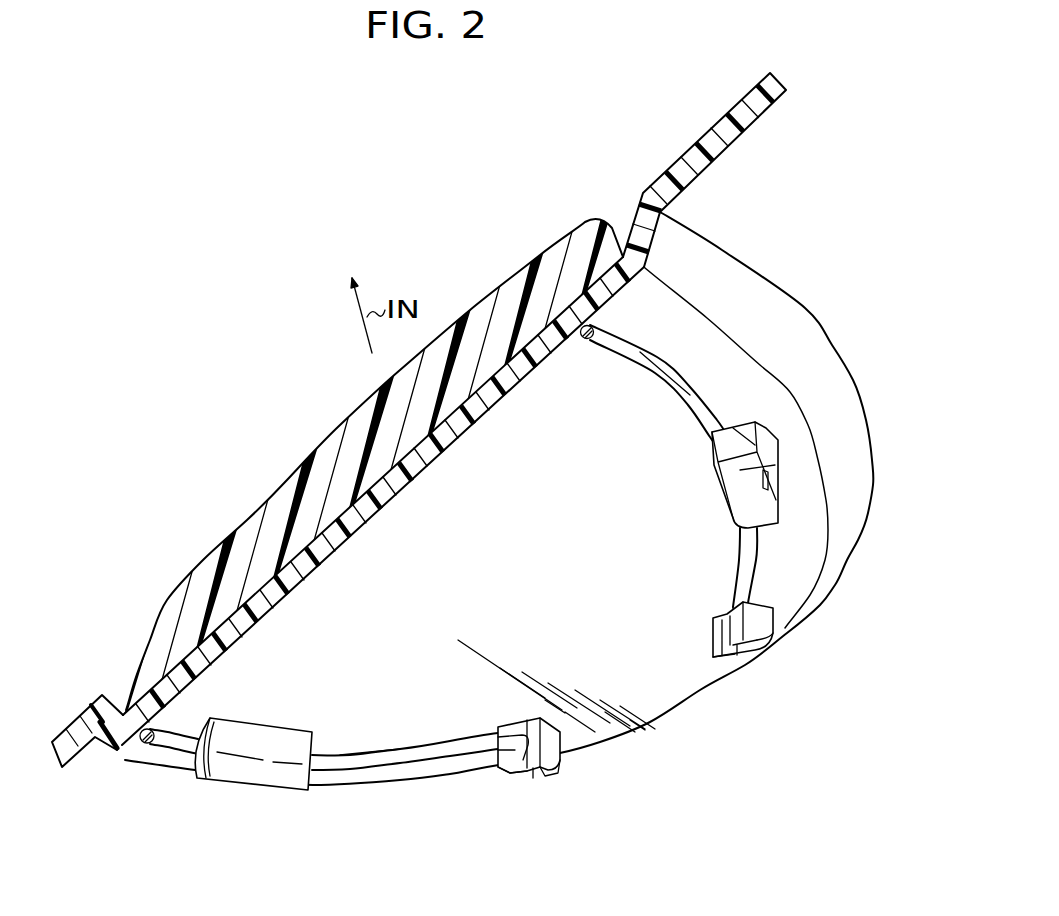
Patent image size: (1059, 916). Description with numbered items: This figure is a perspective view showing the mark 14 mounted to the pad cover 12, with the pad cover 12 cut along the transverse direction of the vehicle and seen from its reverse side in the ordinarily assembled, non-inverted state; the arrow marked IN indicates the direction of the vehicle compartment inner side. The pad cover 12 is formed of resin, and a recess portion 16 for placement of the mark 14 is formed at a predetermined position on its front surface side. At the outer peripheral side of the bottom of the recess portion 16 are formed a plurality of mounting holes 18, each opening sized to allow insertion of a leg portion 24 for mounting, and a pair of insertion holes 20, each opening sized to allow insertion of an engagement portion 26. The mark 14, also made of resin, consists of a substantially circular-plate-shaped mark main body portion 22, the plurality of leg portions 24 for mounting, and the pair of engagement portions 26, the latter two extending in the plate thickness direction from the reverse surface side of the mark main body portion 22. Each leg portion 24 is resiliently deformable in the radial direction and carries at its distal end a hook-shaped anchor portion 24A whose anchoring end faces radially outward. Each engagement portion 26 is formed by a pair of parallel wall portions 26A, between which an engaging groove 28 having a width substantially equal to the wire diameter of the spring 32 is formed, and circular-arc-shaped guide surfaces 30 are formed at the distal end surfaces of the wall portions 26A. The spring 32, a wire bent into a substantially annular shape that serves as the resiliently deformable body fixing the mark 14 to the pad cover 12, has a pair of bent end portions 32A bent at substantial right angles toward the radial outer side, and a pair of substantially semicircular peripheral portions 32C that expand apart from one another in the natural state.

The pad cover 12 is at (688, 145).
The mark 14 is at (363, 400).
The recess portion 16 is at (493, 365).
The mounting holes 18 is at (765, 437).
The insertion holes 20 is at (520, 727).
The mark main body portion 22 is at (287, 487).
The leg portions for mounting 24 is at (727, 487).
The anchor portion 24A is at (765, 508).
The engagement portions 26 is at (547, 775).
The wall portions 26A is at (550, 757).
The engaging groove 28 is at (538, 780).
The guide surfaces 30 is at (507, 773).
The spring 32 is at (407, 770).
The bent end portions 32A is at (512, 776).
The peripheral portions 32C is at (707, 405).